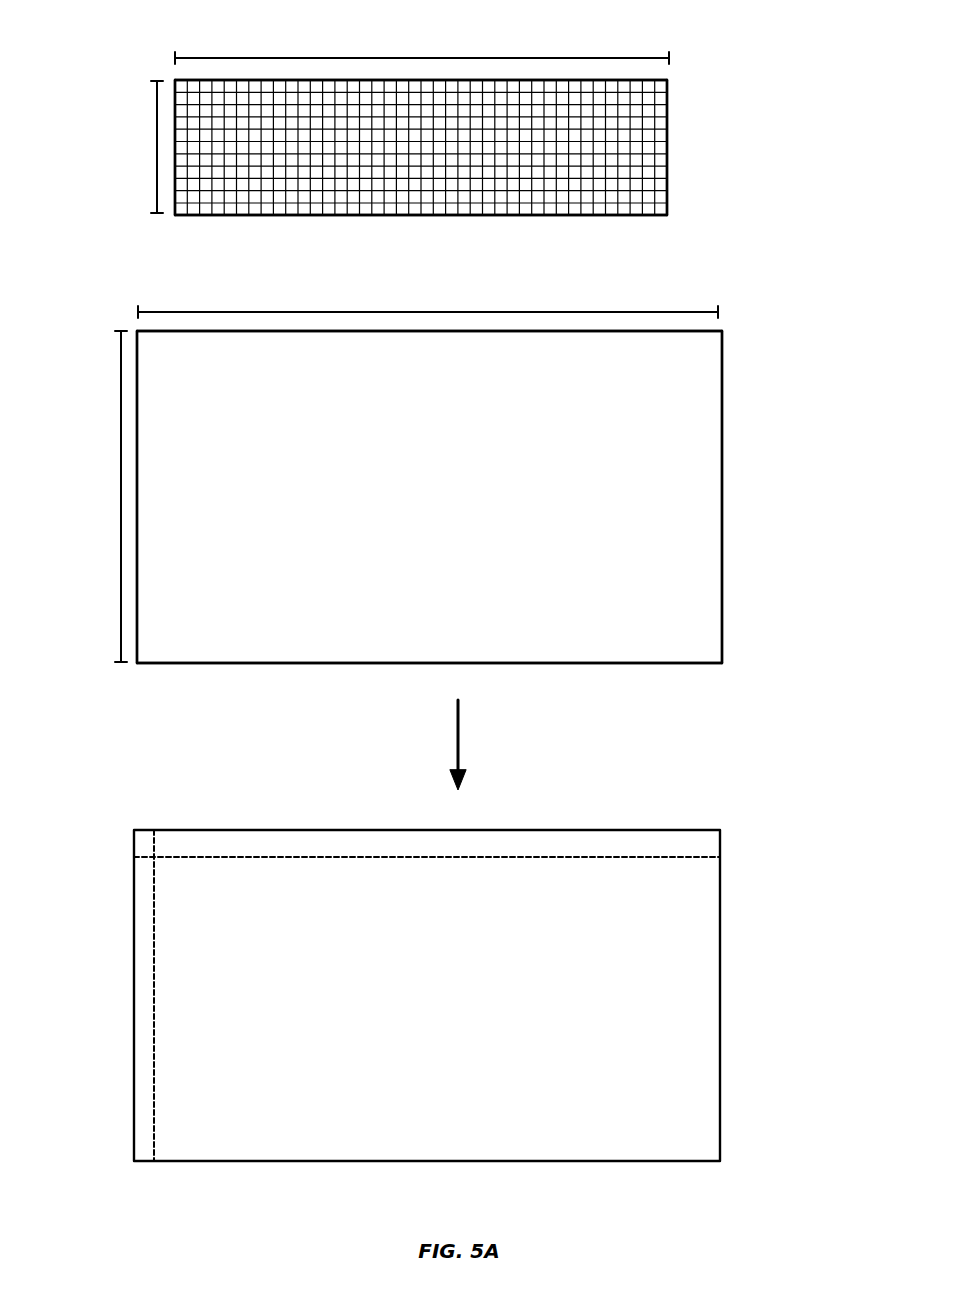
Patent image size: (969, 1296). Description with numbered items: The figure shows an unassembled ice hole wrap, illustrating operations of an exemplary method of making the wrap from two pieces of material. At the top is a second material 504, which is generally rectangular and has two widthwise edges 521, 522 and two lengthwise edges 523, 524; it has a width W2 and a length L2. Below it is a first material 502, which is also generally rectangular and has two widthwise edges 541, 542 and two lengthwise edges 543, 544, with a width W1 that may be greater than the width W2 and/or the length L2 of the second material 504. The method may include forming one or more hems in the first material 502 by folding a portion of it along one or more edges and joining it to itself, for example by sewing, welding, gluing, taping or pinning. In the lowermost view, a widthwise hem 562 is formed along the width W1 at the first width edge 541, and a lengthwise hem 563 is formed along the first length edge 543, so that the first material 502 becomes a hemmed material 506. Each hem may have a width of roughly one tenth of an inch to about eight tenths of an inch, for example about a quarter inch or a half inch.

The first material 502 is at (679, 526).
The second material 504 is at (643, 163).
The hemmed material 506 is at (720, 995).
The widthwise edge 521 is at (447, 82).
The widthwise edge 522 is at (365, 218).
The lengthwise edge 523 is at (175, 108).
The lengthwise edge 524 is at (670, 100).
The first width edge 541 is at (502, 331).
The widthwise edge 542 is at (387, 663).
The first length edge 543 is at (137, 374).
The lengthwise edge 544 is at (722, 387).
The widthwise hem 562 is at (510, 857).
The lengthwise hem 563 is at (154, 913).
The width of first material W1 is at (182, 312).
The width of second material W2 is at (273, 58).
The length of second material L2 is at (152, 143).